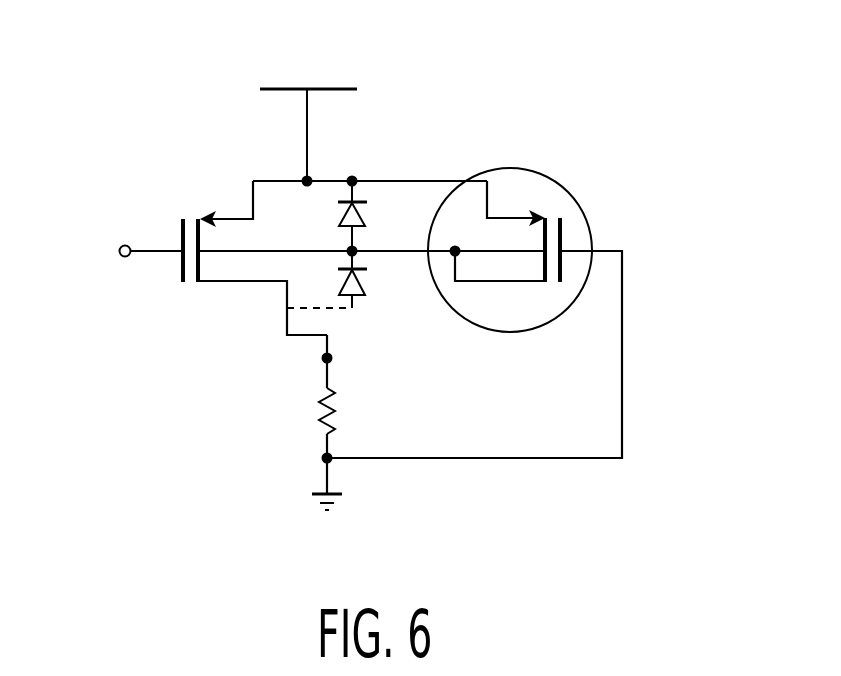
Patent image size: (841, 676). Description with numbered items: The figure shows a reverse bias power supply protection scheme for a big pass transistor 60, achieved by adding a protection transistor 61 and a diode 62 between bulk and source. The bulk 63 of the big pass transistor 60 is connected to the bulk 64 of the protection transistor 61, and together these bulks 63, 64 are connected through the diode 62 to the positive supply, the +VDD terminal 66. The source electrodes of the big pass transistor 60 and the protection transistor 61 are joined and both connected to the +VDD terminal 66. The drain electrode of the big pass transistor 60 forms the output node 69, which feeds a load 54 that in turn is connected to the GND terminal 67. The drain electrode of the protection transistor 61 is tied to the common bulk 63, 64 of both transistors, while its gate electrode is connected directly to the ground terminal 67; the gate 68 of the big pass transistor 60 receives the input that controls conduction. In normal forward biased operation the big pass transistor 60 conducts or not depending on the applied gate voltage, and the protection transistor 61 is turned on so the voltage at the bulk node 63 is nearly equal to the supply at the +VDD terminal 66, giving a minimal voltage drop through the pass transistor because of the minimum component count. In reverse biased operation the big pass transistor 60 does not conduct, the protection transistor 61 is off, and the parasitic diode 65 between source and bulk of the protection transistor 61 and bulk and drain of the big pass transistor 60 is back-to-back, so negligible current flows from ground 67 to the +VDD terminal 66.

The resistor 54 is at (335, 408).
The big pass transistor 60 is at (217, 317).
The protection transistor 61 is at (577, 200).
The protection diodes 62 is at (336, 212).
The bulk of the big pass transistor 63 is at (238, 252).
The bulk of the protection transistor 64 is at (502, 273).
The parasitic diode 65 is at (647, 372).
The +VDD terminal 66 is at (338, 67).
The GND terminal 67 is at (318, 500).
The input gate terminal 68 is at (120, 302).
The output voltage node 69 is at (387, 370).